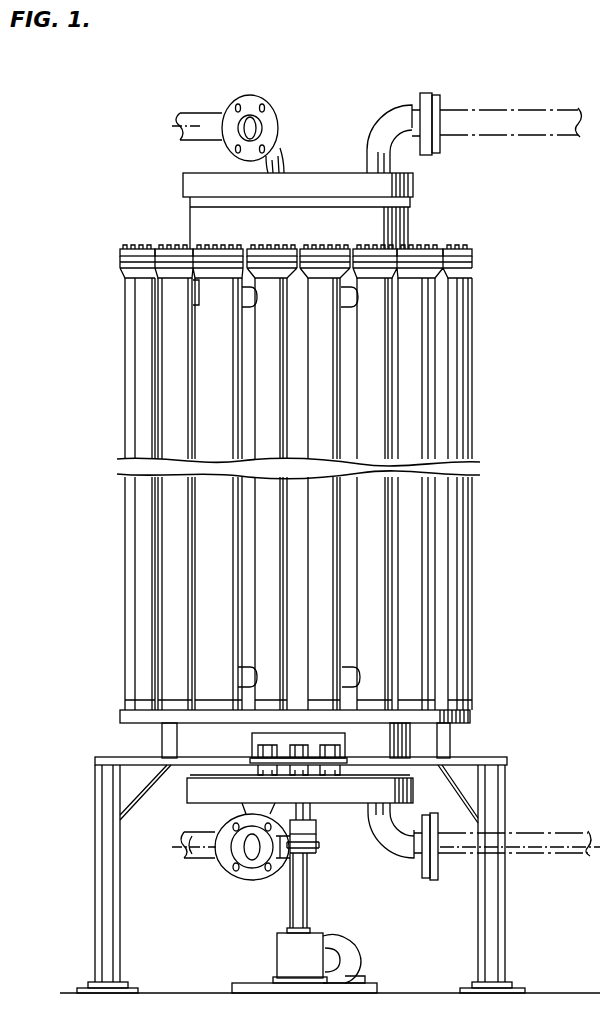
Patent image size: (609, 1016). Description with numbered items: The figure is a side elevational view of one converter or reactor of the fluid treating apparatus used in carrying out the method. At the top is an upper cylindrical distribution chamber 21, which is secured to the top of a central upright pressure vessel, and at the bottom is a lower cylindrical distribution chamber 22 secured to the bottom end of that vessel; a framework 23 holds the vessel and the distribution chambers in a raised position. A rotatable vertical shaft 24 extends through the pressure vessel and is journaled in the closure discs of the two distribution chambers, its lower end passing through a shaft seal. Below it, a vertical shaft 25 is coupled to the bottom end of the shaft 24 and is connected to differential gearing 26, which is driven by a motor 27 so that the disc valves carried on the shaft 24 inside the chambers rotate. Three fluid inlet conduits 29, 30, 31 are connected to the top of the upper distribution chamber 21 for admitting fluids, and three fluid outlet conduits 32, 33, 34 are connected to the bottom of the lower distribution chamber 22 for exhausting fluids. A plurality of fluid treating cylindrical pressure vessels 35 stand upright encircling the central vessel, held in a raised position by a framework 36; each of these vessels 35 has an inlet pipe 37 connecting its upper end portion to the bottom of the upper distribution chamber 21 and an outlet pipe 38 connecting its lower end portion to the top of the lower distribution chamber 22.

The upper cylindrical distribution chamber 21 is at (420, 222).
The lower cylindrical distribution chamber 22 is at (420, 743).
The framework 23 is at (92, 825).
The rotatable vertical shaft 24 is at (308, 832).
The vertical shaft 25 is at (303, 890).
The differential gearing 26 is at (277, 952).
The motor 27 is at (348, 956).
The fluid inlet conduit 29 is at (379, 129).
The fluid inlet conduit 30 is at (236, 110).
The fluid inlet conduit 31 is at (302, 146).
The fluid outlet conduit 32 is at (392, 858).
The fluid outlet conduit 33 is at (222, 870).
The fluid outlet conduit 34 is at (270, 878).
The fluid treating cylindrical pressure vessels 35 is at (178, 360).
The framework 36 is at (113, 715).
The inlet pipe 37 is at (198, 296).
The outlet pipe 38 is at (246, 688).